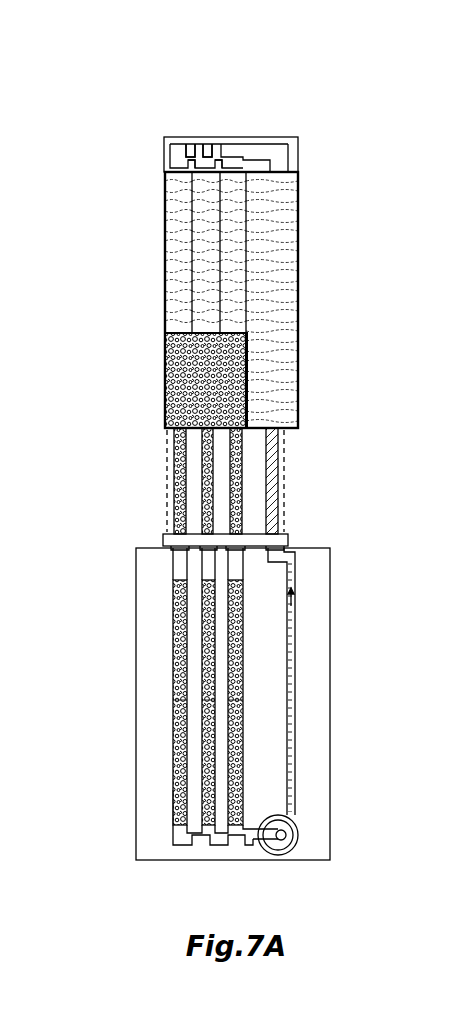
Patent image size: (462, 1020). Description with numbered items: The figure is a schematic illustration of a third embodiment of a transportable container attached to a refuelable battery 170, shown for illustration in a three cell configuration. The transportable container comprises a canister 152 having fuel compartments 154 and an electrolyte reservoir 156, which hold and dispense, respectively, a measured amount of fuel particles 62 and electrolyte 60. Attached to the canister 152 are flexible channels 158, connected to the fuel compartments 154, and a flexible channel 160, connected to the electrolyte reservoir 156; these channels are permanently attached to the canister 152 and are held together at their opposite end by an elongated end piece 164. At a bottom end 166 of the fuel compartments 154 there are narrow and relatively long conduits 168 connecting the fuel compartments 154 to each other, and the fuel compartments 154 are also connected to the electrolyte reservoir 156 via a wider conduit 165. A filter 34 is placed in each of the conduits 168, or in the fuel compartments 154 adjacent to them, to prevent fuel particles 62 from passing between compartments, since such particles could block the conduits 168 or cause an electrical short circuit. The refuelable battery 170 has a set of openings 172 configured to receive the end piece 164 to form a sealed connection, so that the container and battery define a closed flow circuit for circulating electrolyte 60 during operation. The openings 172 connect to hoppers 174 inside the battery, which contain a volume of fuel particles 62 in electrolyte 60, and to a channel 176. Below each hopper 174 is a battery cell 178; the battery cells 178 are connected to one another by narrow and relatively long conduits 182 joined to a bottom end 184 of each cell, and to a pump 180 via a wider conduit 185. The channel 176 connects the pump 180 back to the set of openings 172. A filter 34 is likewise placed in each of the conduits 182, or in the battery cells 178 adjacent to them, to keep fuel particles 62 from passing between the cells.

The filter 34 is at (245, 846).
The electrolyte 60 is at (281, 338).
The fuel particles 62 is at (165, 388).
The canister 152 is at (298, 212).
The fuel compartments 154 is at (205, 260).
The electrolyte reservoir 156 is at (282, 272).
The flexible channels 158 is at (237, 483).
The flexible channel 160 is at (272, 478).
The elongated end piece 164 is at (288, 538).
The wider conduit 165 is at (265, 140).
The bottom end 166 is at (172, 193).
The conduits 168 is at (221, 150).
The refuelable battery 170 is at (331, 660).
The set of openings 172 is at (237, 568).
The hoppers 174 is at (238, 640).
The channel 176 is at (295, 598).
The battery cell 178 is at (238, 728).
The pump 180 is at (300, 826).
The conduits 182 is at (227, 846).
The bottom end 184 is at (178, 806).
The wider conduit 185 is at (253, 845).